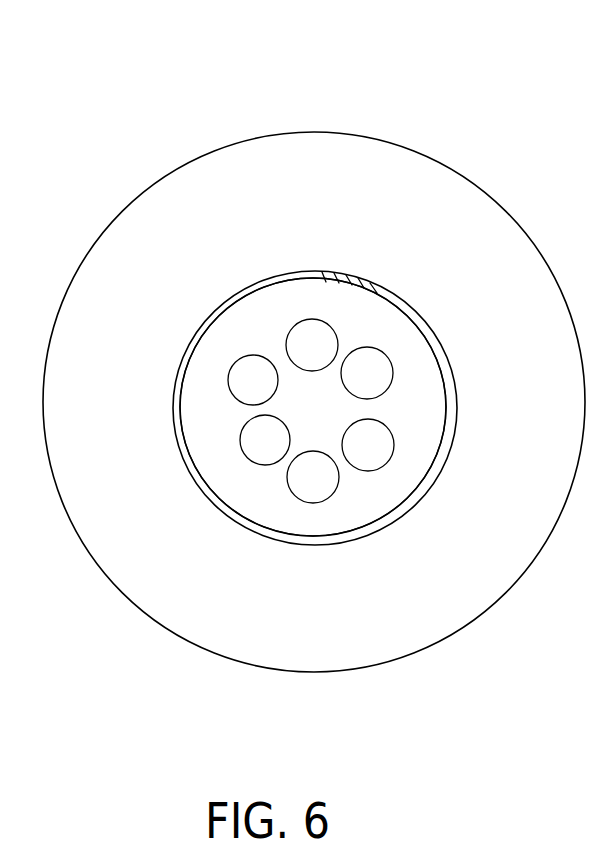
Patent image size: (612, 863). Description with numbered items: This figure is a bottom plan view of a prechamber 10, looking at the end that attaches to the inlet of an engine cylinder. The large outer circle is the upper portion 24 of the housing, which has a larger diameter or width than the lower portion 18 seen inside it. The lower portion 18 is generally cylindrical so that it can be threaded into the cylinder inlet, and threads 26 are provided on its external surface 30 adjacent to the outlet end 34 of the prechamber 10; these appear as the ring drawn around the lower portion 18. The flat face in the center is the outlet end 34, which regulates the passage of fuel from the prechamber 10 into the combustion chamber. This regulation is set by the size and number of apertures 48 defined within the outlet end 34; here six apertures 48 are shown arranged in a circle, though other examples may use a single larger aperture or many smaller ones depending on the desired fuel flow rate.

The prechamber 10 is at (143, 82).
The lower portion 18 is at (217, 307).
The upper portion 24 is at (427, 153).
The threads 26 is at (283, 273).
The external surface 30 is at (412, 303).
The outlet end 34 is at (207, 410).
The apertures 48 is at (312, 342).